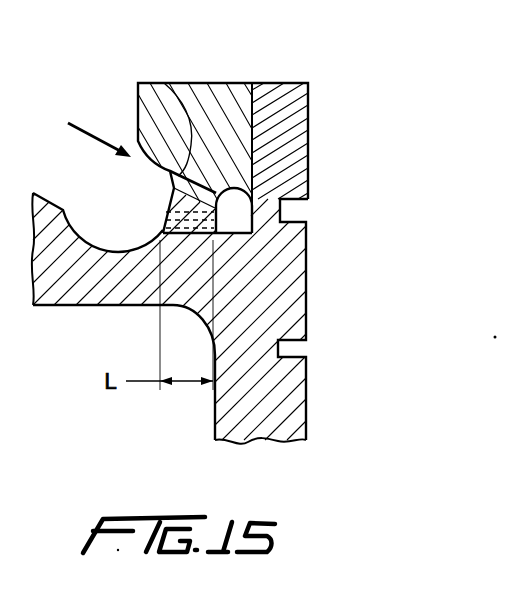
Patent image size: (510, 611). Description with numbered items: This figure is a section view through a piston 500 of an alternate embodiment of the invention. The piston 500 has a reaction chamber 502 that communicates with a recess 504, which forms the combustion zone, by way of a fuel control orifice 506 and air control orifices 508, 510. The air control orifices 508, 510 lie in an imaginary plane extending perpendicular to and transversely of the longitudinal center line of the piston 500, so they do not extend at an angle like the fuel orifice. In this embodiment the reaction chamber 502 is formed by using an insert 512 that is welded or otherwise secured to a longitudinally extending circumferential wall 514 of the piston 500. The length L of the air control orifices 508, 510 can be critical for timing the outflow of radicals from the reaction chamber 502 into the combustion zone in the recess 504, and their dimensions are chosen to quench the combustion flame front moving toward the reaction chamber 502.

The piston 500 is at (306, 408).
The reaction chamber 502 is at (248, 236).
The recess 504 is at (124, 133).
The fuel control orifice 506 is at (163, 83).
The air control orifice 508 is at (170, 212).
The air control orifice 510 is at (172, 230).
The insert 512 is at (235, 92).
The circumferential wall 514 is at (312, 128).